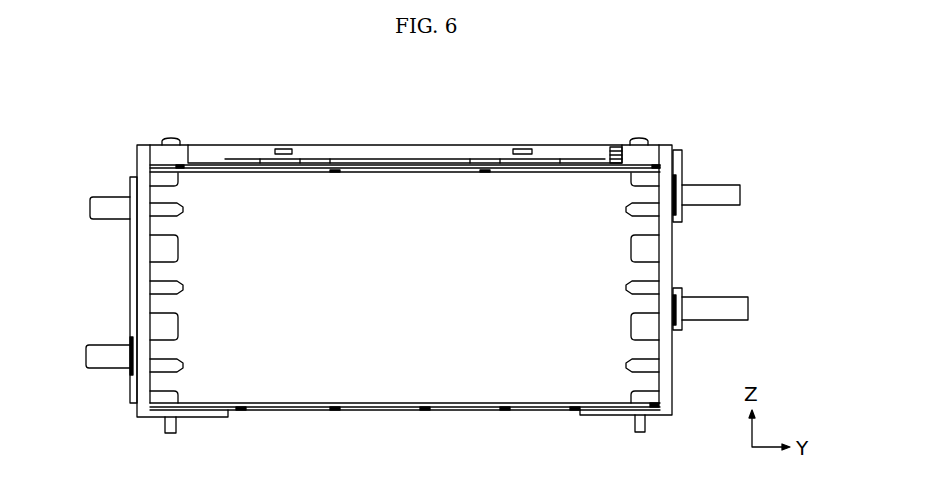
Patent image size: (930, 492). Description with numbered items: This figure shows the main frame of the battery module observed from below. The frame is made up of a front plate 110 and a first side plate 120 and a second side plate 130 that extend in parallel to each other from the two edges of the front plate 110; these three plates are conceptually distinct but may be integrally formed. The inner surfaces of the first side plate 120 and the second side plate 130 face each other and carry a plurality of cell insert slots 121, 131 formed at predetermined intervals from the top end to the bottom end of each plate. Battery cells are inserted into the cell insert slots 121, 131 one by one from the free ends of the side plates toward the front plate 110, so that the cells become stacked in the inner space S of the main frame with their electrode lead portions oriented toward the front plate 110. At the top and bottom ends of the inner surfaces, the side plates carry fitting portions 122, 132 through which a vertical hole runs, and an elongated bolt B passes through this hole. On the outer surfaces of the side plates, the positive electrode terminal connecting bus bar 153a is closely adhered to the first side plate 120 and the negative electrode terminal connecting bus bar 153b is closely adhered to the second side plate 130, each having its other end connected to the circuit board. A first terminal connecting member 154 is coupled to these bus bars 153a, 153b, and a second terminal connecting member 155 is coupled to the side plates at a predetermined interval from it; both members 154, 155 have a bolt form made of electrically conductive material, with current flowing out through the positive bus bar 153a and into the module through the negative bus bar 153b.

The front plate 110 is at (369, 147).
The first side plate 120 is at (148, 281).
The cell insert slots 121 is at (160, 231).
The fitting portions 122 is at (157, 163).
The second side plate 130 is at (660, 280).
The cell insert slots 131 is at (650, 228).
The fitting portions 132 is at (655, 164).
The positive electrode terminal connecting bus bar 153a is at (134, 405).
The negative electrode terminal connecting bus bar 153b is at (683, 160).
The first terminal connecting member 154 is at (92, 208).
The second terminal connecting member 155 is at (88, 355).
The bolt B is at (171, 142).
The inner space S is at (437, 199).